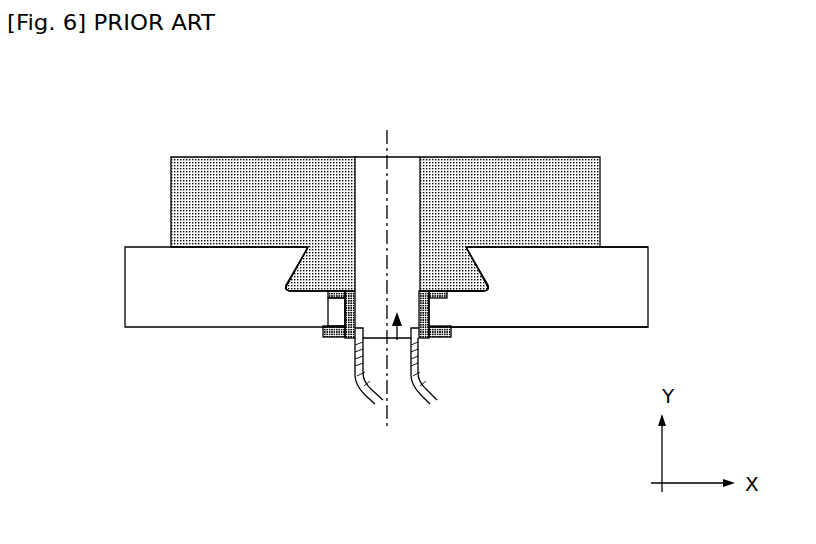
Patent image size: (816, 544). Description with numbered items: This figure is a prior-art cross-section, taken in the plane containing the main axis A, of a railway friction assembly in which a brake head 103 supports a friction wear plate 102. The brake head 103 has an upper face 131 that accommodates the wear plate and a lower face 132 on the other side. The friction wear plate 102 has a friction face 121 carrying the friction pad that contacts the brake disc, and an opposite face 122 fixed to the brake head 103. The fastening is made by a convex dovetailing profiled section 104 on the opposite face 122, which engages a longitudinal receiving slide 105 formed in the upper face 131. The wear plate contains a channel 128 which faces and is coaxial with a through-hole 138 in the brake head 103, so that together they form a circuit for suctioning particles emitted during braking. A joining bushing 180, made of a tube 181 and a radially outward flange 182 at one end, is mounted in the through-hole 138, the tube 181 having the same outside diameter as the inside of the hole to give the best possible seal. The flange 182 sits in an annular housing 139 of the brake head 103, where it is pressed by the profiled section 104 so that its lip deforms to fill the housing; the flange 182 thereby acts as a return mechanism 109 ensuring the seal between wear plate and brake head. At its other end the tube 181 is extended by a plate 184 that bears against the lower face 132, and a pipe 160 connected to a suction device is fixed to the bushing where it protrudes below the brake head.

The friction wear plate 102 is at (238, 166).
The brake head 103 is at (157, 285).
The profiled section 104 is at (333, 283).
The receiving slide 105 is at (477, 302).
The return mechanism 109 is at (433, 282).
The friction face 121 is at (528, 157).
The opposite face 122 is at (573, 250).
The channel 128 is at (404, 185).
The upper face 131 is at (613, 248).
The lower face 132 is at (608, 328).
The through-hole 138 is at (398, 345).
The annular housing 139 is at (336, 315).
The pipe 160 is at (420, 372).
The joining bushing 180 is at (427, 312).
The tube 181 is at (356, 314).
The flange 182 is at (335, 298).
The plate 184 is at (342, 337).